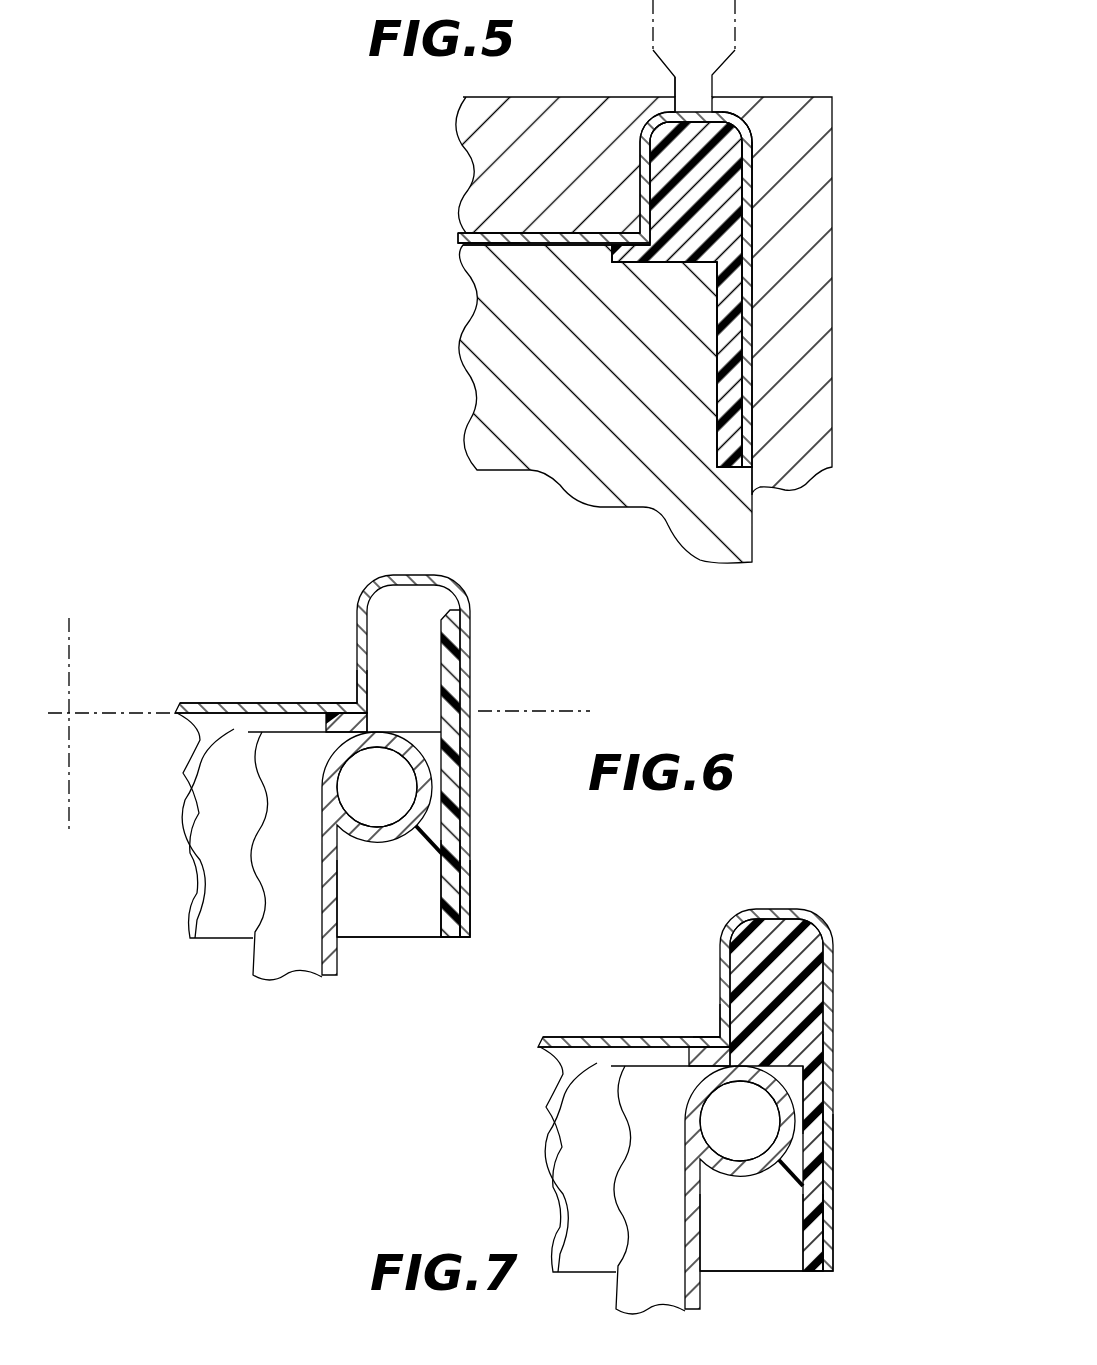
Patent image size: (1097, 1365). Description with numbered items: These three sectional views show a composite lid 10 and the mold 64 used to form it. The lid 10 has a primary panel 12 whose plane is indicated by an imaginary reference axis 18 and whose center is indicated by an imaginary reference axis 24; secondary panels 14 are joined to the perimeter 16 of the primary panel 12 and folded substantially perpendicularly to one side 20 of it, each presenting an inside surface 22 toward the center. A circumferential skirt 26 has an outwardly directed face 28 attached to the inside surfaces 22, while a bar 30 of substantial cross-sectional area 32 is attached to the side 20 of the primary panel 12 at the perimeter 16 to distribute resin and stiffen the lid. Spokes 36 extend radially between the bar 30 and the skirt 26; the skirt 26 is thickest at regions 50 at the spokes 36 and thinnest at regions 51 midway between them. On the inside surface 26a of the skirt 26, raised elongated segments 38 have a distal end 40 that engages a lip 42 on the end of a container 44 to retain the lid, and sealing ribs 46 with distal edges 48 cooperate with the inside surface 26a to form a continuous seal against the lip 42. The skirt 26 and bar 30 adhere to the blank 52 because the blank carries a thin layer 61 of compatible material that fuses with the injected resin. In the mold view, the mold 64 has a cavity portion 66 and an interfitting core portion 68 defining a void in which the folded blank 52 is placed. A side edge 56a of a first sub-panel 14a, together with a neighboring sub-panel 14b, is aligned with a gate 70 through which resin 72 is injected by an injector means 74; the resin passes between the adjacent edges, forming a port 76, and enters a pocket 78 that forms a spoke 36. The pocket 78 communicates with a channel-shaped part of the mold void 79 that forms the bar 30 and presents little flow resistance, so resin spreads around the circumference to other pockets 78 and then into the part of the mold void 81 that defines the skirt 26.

In FIG. 6, the lid 10 is at (232, 592).
In FIG. 5, the primary panel 12 is at (505, 243).
In FIG. 6, the primary panel 12 is at (203, 703).
In FIG. 7, the primary panel 12 is at (634, 1008).
In FIG. 5, the secondary panels 14 is at (750, 365).
In FIG. 6, the secondary panels 14 is at (462, 801).
In FIG. 7, the secondary panels 14 is at (719, 1090).
In FIG. 5, the first sub-panels 14a is at (750, 158).
In FIG. 5, the second leg of channel 14b is at (750, 308).
In FIG. 6, the perimeter 16 is at (353, 698).
In FIG. 7, the perimeter 16 is at (677, 1008).
In FIG. 6, the imaginary reference axis 18 is at (590, 706).
In FIG. 5, the side of the primary panel 20 is at (520, 255).
In FIG. 6, the side of the primary panel 20 is at (234, 729).
In FIG. 7, the side of the primary panel 20 is at (530, 1167).
In FIG. 5, the inside surface 22 is at (745, 423).
In FIG. 6, the inside surface 22 is at (462, 895).
In FIG. 7, the inside surface 22 is at (867, 1149).
In FIG. 6, the imaginary reference axis 24 is at (69, 632).
In FIG. 6, the skirt 26 is at (450, 928).
In FIG. 7, the skirt 26 is at (853, 1084).
In FIG. 6, the inside surface of the skirt 26a is at (442, 927).
In FIG. 7, the inside surface of the skirt 26a is at (790, 1301).
In FIG. 6, the outwardly directed face 28 is at (465, 920).
In FIG. 7, the outwardly directed face 28 is at (868, 1227).
In FIG. 6, the bar 30 is at (330, 723).
In FIG. 7, the bar 30 is at (681, 1088).
In FIG. 6, the cross-sectional area 32 is at (360, 723).
In FIG. 5, the spokes 36 is at (718, 215).
In FIG. 7, the spokes 36 is at (814, 1095).
In FIG. 6, the raised elongated segments 38 is at (432, 862).
In FIG. 7, the raised elongated segments 38 is at (751, 1226).
In FIG. 6, the distal end 40 is at (430, 843).
In FIG. 7, the distal end 40 is at (740, 1157).
In FIG. 6, the lip 42 is at (365, 842).
In FIG. 7, the lip 42 is at (707, 1187).
In FIG. 6, the container 44 is at (267, 957).
In FIG. 7, the container 44 is at (616, 1194).
In FIG. 6, the sealing ribs 46 is at (437, 800).
In FIG. 6, the distal edge 48 is at (437, 720).
In FIG. 7, the thicker skirt regions 50 is at (855, 1232).
In FIG. 6, the thinner skirt regions 51 is at (448, 868).
In FIG. 5, the blank 52 is at (495, 240).
In FIG. 5, the side edge 56a is at (737, 115).
In FIG. 6, the thin layer 61 is at (190, 800).
In FIG. 7, the thin layer 61 is at (549, 1159).
In FIG. 5, the mold 64 is at (388, 202).
In FIG. 5, the cavity portion 66 is at (480, 140).
In FIG. 5, the core portion 68 is at (492, 394).
In FIG. 5, the gate 70 is at (713, 97).
In FIG. 5, the resin 72 is at (727, 203).
In FIG. 5, the injector means 74 is at (675, 77).
In FIG. 5, the port 76 is at (668, 103).
In FIG. 5, the pocket 78 is at (757, 140).
In FIG. 5, the channel 79 is at (628, 265).
In FIG. 5, the mold void 81 is at (717, 437).